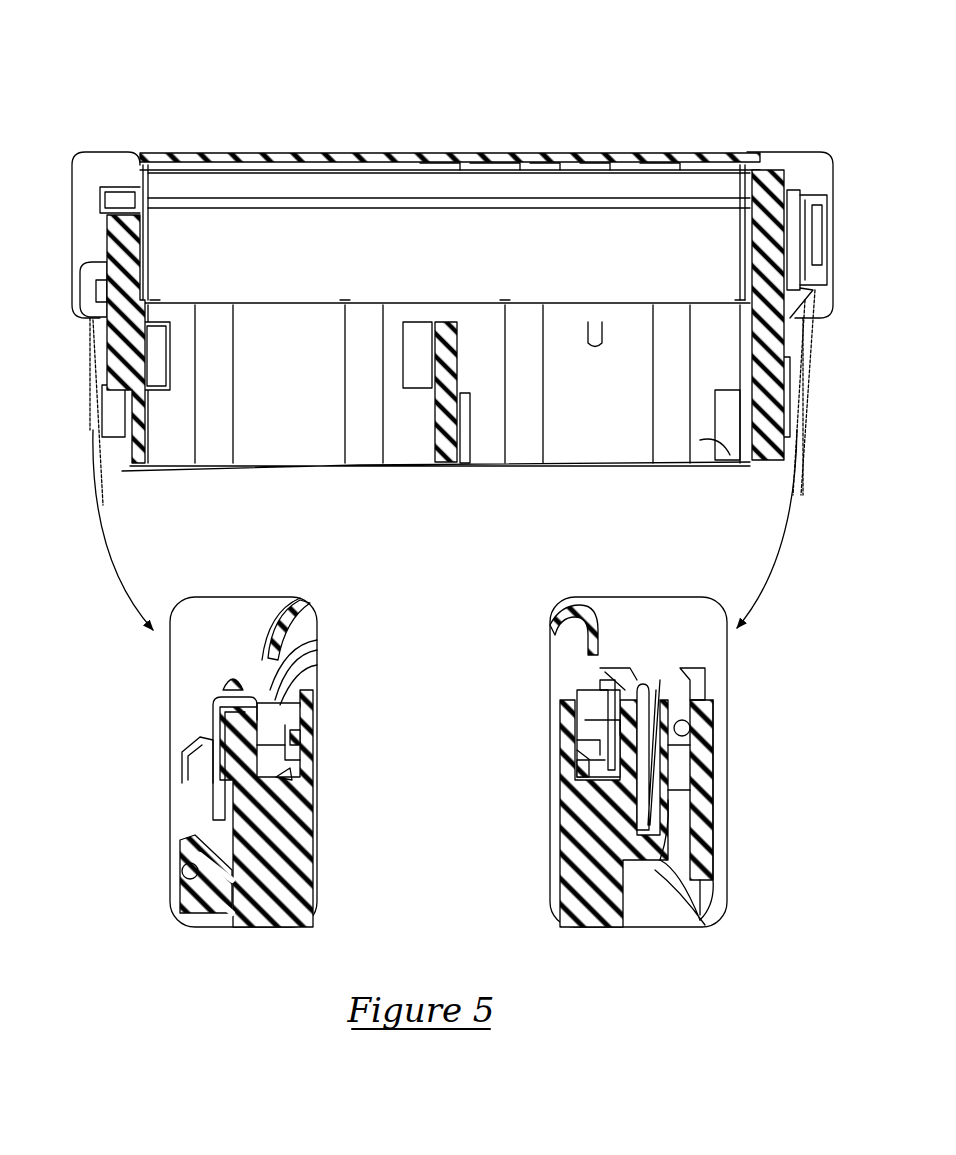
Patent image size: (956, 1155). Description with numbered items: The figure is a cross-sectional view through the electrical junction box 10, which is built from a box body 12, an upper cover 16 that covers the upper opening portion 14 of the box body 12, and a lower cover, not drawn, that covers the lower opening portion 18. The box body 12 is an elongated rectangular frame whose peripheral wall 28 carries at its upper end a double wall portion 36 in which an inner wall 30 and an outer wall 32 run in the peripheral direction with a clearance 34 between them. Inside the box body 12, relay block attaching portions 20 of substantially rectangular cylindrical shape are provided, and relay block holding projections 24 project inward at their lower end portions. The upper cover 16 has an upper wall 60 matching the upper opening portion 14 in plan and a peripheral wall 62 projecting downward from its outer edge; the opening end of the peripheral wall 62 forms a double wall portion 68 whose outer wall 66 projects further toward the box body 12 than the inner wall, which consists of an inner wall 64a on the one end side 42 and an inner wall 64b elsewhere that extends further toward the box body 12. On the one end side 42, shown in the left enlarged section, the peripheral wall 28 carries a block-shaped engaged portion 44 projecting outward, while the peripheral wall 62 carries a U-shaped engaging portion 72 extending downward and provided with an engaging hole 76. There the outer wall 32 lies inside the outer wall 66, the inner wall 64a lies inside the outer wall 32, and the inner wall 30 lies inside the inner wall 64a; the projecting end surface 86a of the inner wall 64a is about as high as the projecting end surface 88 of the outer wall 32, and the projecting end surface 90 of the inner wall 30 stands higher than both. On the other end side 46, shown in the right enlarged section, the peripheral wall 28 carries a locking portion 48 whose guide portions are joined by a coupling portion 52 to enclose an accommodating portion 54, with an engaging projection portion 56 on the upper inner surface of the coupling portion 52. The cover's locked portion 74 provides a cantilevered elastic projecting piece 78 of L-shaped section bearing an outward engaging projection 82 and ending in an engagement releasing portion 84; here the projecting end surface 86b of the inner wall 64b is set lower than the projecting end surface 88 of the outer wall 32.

The electrical junction box 10 is at (458, 276).
The box body 12 is at (473, 408).
The upper opening portion 14 is at (750, 227).
The upper cover 16 is at (450, 188).
The lower opening portion 18 is at (690, 440).
The relay block attaching portion 20 is at (276, 440).
The relay block holding projection 24 is at (470, 445).
The peripheral wall 28 is at (268, 905).
The inner wall 30 is at (292, 750).
The outer wall 32 is at (275, 755).
The clearance 34 is at (285, 778).
The double wall portion 36 is at (431, 752).
The one end side 42 is at (162, 122).
The engaged portion 44 is at (205, 855).
The other end side 46 is at (731, 122).
The locking portion 48 is at (675, 790).
The coupling portion 52 is at (725, 765).
The accommodating portion 54 is at (680, 800).
The engaging projection portion 56 is at (682, 730).
The upper wall 60 is at (457, 156).
The peripheral wall 62 is at (278, 646).
The inner wall 64a is at (282, 700).
The inner wall 64b is at (605, 730).
The outer wall 66 is at (265, 676).
The double wall portion 68 is at (451, 672).
The engaging portion 72 is at (180, 752).
The locked portion 74 is at (648, 640).
The engaging hole 76 is at (195, 870).
The elastic projecting piece 78 is at (709, 830).
The engaging projection 82 is at (680, 745).
The engagement releasing portion 84 is at (690, 688).
The projecting end surface 86a is at (275, 725).
The projecting end surface 86b is at (588, 768).
The projecting end surface 88 is at (248, 703).
The projecting end surface 90 is at (292, 704).